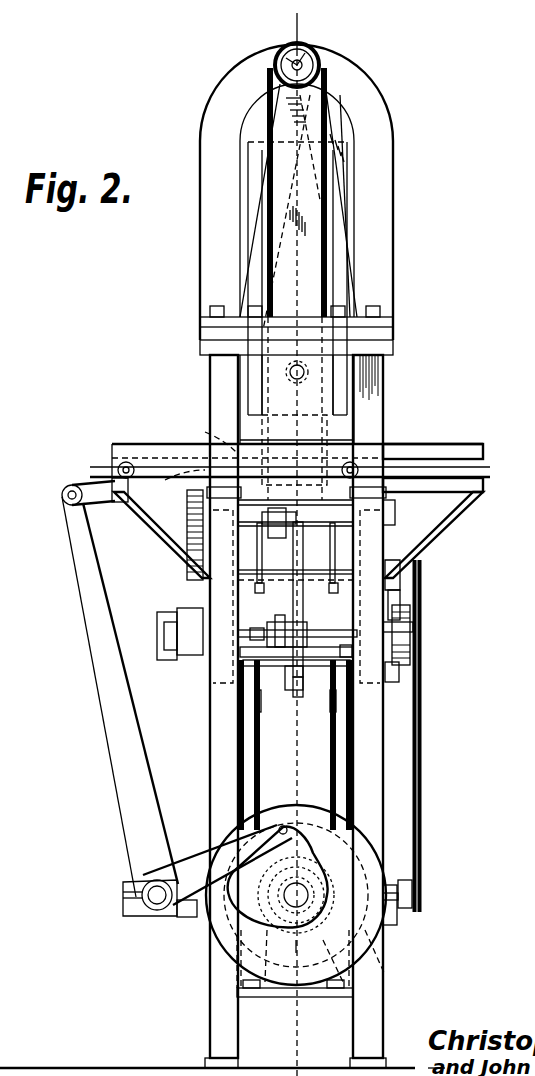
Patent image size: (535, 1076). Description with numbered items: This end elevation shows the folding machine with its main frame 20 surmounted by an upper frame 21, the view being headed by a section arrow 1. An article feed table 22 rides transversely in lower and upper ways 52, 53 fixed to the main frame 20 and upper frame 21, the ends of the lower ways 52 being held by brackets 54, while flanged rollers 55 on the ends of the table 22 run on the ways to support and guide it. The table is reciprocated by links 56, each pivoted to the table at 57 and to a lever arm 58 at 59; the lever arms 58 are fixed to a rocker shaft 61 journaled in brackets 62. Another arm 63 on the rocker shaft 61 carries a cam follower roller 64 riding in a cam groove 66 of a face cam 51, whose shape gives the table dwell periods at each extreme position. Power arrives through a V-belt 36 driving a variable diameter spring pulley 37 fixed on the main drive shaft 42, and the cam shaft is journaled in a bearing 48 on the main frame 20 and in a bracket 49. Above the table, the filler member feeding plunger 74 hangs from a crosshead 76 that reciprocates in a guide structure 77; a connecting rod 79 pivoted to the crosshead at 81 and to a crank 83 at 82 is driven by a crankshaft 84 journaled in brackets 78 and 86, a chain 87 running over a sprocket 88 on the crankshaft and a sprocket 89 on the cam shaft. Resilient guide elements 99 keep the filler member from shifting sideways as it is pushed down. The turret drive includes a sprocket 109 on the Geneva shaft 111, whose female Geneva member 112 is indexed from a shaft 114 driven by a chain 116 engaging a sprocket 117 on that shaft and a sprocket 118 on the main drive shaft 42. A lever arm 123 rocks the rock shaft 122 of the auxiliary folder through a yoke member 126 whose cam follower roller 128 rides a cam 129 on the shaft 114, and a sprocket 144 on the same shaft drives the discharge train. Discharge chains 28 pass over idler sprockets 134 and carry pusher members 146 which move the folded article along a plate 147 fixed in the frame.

The section line 1 is at (297, 13).
The main frame 20 is at (383, 756).
The upper frame 21 is at (215, 382).
The article feed table 22 is at (150, 452).
The discharge chains 28 is at (236, 722).
The V-belt 36 is at (352, 990).
The variable diameter spring pulley 37 is at (370, 958).
The main drive shaft 42 is at (392, 928).
The bearing 48 is at (205, 945).
The bracket 49 is at (272, 997).
The face cam 51 is at (245, 960).
The lower ways 52 is at (475, 482).
The upper ways 53 is at (470, 444).
The brackets 54 is at (452, 540).
The flanged rollers 55 is at (120, 464).
The links 56 is at (105, 488).
The pivot connection 57 is at (201, 449).
The lever arm 58 is at (100, 672).
The pivot connection 59 is at (62, 497).
The rocker shaft 61 is at (152, 906).
The brackets 62 is at (190, 916).
The arm 63 is at (205, 868).
The cam follower roller 64 is at (292, 832).
The cam groove 66 is at (248, 932).
The feeding plunger 74 is at (325, 442).
The crosshead 76 is at (352, 418).
The guide structure 77 is at (240, 178).
The bracket 78 is at (393, 176).
The connecting rod 79 is at (362, 206).
The pivot connection 81 is at (297, 380).
The pivot connection 82 is at (355, 160).
The crank 83 is at (330, 128).
The crankshaft 84 is at (283, 52).
The bracket 86 is at (337, 292).
The chain 87 is at (372, 352).
The sprocket 88 is at (318, 56).
The sprocket 89 is at (305, 956).
The resilient guide elements 99 is at (299, 546).
The sprocket 109 is at (425, 560).
The Geneva shaft 111 is at (418, 597).
The female Geneva member 112 is at (188, 518).
The shaft 114 is at (190, 658).
The chain 116 is at (422, 788).
The sprocket 117 is at (420, 645).
The sprocket 118 is at (412, 912).
The rock shaft 122 is at (392, 510).
The lever arm 123 is at (285, 506).
The yoke member 126 is at (303, 562).
The cam follower roller 128 is at (278, 616).
The cam 129 is at (295, 712).
The idler sprockets 134 is at (261, 690).
The sprocket 144 is at (408, 670).
The pusher members 146 is at (248, 630).
The plate 147 is at (322, 668).